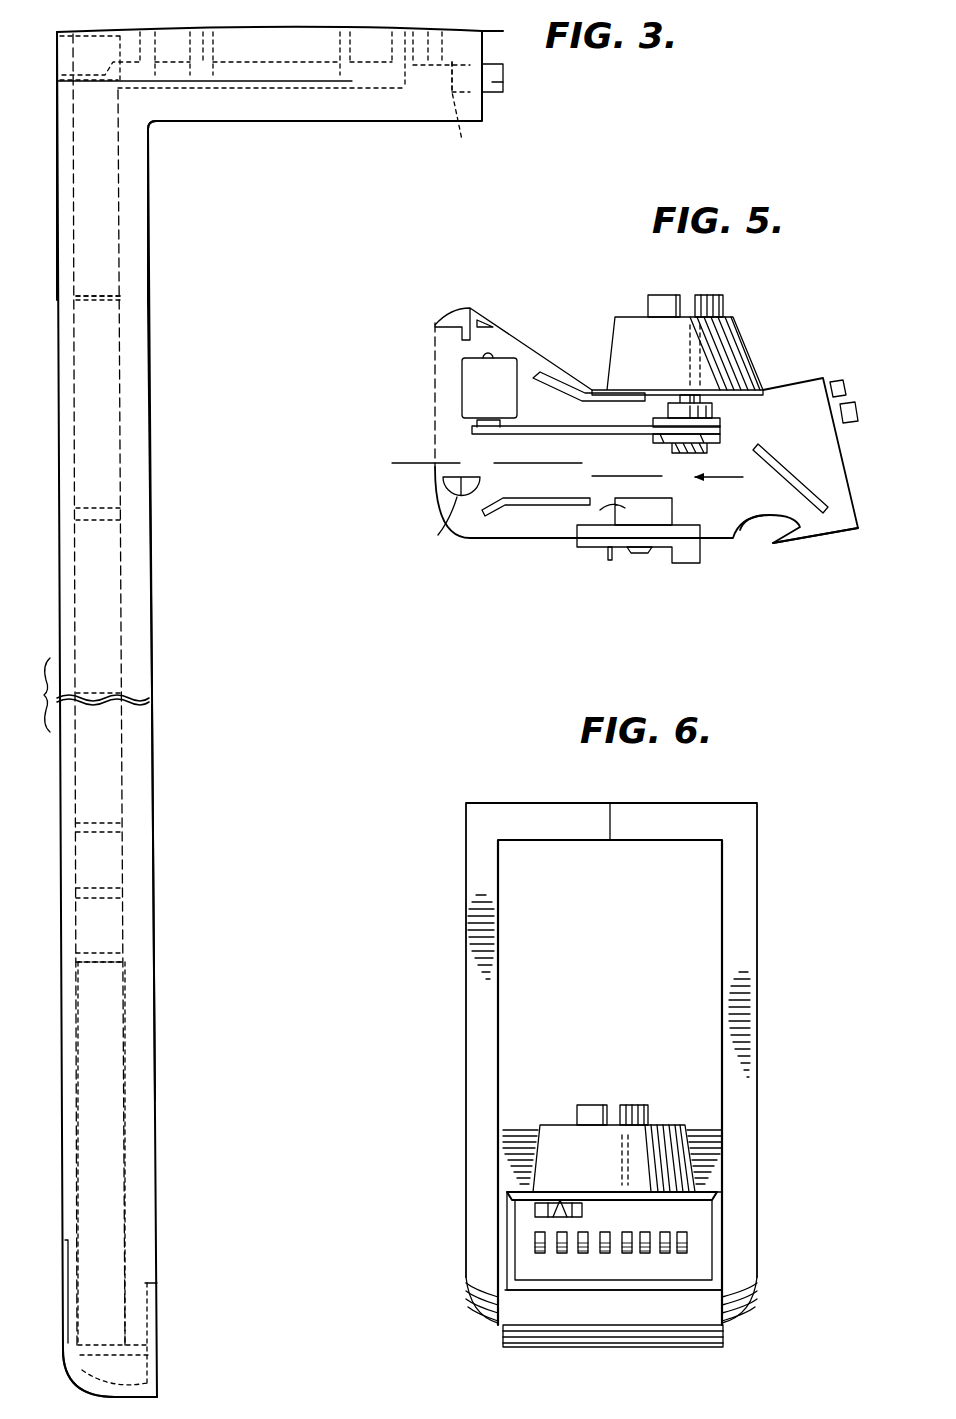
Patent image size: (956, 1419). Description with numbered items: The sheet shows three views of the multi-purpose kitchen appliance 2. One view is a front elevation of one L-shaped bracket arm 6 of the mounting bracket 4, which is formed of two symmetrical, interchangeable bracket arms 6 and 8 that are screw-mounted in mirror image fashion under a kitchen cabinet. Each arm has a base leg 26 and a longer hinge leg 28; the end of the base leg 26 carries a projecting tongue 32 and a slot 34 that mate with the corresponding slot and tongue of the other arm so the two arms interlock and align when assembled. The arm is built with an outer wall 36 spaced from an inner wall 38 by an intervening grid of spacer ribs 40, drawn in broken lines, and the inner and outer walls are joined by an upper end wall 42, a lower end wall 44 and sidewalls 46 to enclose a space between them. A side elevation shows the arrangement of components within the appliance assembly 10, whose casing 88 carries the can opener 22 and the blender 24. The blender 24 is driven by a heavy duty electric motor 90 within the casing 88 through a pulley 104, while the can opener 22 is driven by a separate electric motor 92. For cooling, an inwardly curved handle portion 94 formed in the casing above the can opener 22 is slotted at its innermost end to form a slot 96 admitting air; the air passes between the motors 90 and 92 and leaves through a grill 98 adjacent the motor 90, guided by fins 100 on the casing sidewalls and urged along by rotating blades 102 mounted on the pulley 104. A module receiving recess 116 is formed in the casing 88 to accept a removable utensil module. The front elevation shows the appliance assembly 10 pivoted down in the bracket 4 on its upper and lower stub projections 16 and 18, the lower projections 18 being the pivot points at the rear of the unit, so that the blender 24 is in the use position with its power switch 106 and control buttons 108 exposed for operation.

In FIG. 6, the multi-purpose kitchen appliance 2 is at (587, 1345).
In FIG. 6, the mounting bracket 4 is at (772, 995).
In FIG. 3, the L-shaped bracket arm 6 is at (178, 597).
In FIG. 6, the L-shaped bracket arm 6 is at (466, 1012).
In FIG. 6, the L-shaped bracket arm 8 is at (750, 1052).
In FIG. 5, the appliance assembly 10 is at (636, 556).
In FIG. 6, the appliance assembly 10 is at (705, 1235).
In FIG. 6, the upper stub projection 16 is at (503, 1138).
In FIG. 5, the lower stub projection 18 is at (438, 518).
In FIG. 6, the lower stub projection 18 is at (498, 1293).
In FIG. 5, the can opener 22 is at (702, 550).
In FIG. 5, the blender 24 is at (745, 317).
In FIG. 6, the blender 24 is at (677, 1125).
In FIG. 3, the base leg 26 is at (283, 113).
In FIG. 3, the hinge leg 28 is at (147, 845).
In FIG. 3, the tongue 32 is at (503, 98).
In FIG. 3, the slot 34 is at (473, 111).
In FIG. 3, the outer wall 36 is at (65, 113).
In FIG. 3, the inner wall 38 is at (138, 198).
In FIG. 3, the spacer ribs 40 is at (95, 300).
In FIG. 3, the upper end wall 42 is at (482, 40).
In FIG. 3, the lower end wall 44 is at (143, 1397).
In FIG. 3, the sidewalls 46 is at (113, 1047).
In FIG. 5, the casing 88 is at (860, 507).
In FIG. 5, the electric motor 90 is at (470, 378).
In FIG. 5, the electric motor 92 is at (618, 507).
In FIG. 5, the handle portion 94 is at (775, 540).
In FIG. 5, the slot 96 is at (811, 511).
In FIG. 5, the grill 98 is at (433, 420).
In FIG. 5, the fins 100 is at (558, 384).
In FIG. 5, the rotating blades 102 is at (705, 450).
In FIG. 5, the pulley 104 is at (718, 417).
In FIG. 6, the power switch 106 is at (535, 1208).
In FIG. 6, the control buttons 108 is at (624, 1255).
In FIG. 5, the module receiving recess 116 is at (500, 315).